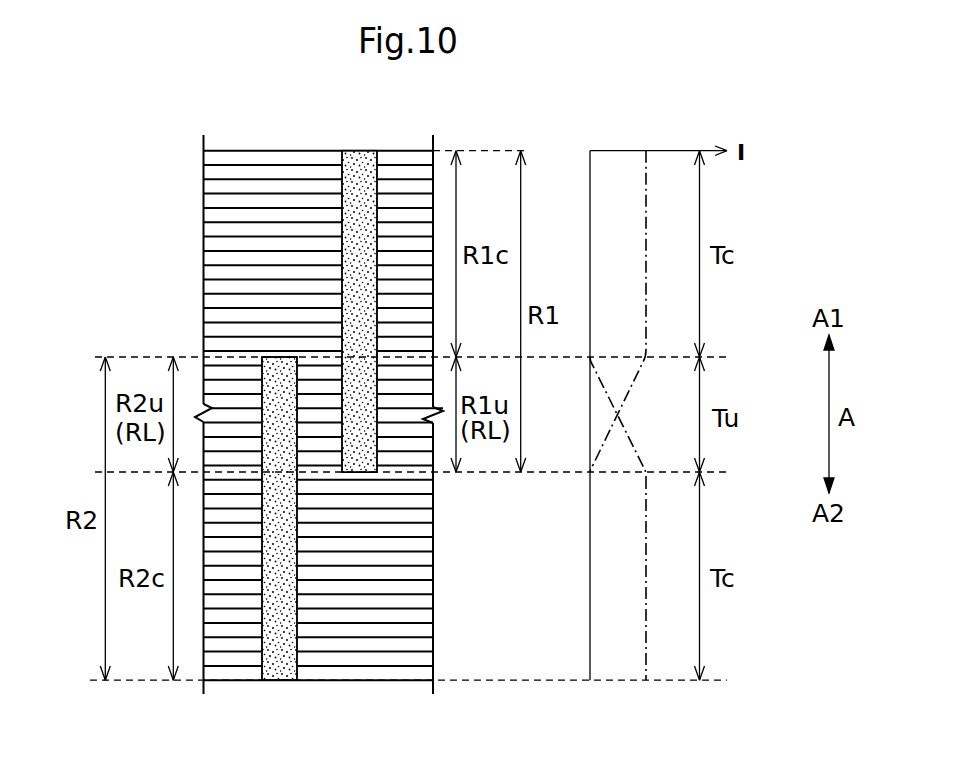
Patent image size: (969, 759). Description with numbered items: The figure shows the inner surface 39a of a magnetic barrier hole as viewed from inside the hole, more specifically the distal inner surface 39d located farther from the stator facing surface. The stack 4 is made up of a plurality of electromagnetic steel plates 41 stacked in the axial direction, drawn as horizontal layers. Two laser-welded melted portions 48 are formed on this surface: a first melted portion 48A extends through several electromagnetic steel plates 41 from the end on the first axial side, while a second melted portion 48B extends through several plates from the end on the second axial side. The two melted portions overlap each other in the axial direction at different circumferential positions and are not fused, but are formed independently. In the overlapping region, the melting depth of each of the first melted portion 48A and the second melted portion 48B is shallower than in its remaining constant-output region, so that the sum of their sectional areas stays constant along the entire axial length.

The stack 4 is at (170, 125).
The electromagnetic steel plates 41 is at (213, 271).
The melted portion 48 is at (259, 409).
The first melted portion 48A is at (360, 158).
The second melted portion 48B is at (273, 670).
The distal inner surface 39d is at (431, 664).
The inner surface 39a is at (323, 642).